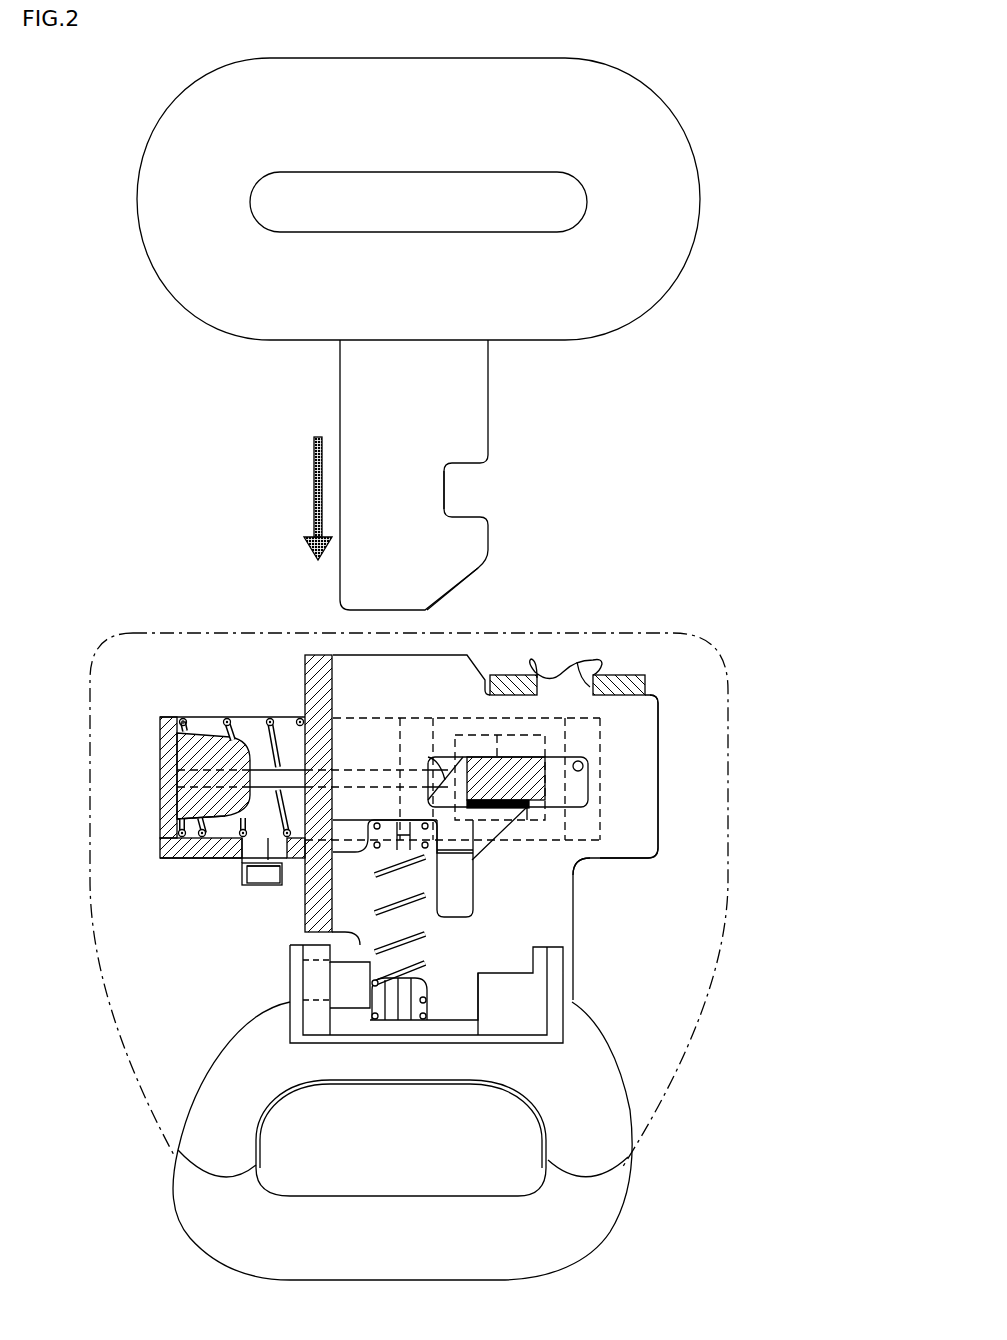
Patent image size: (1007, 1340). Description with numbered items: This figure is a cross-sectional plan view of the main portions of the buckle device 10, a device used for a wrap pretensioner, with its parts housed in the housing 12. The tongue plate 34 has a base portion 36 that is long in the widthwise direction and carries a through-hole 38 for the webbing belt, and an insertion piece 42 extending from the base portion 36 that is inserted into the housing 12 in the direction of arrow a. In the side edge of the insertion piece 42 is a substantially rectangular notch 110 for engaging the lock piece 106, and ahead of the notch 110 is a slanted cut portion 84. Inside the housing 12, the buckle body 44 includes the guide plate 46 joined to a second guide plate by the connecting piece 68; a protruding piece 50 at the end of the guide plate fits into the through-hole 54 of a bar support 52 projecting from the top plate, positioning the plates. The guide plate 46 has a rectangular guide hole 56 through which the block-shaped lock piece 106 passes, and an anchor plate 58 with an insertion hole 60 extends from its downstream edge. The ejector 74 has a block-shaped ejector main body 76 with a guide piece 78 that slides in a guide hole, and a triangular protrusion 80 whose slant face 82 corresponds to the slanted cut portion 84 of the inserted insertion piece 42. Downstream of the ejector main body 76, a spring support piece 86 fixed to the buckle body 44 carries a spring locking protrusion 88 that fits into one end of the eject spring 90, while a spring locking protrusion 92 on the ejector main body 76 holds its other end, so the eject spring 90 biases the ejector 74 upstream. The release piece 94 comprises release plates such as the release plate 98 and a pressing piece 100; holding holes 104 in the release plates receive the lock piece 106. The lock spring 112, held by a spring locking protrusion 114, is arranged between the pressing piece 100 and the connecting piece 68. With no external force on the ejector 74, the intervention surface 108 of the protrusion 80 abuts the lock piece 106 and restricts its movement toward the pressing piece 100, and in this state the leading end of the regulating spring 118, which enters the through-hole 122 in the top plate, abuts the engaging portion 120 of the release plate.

The buckle device 10 is at (840, 338).
The housing 12 is at (724, 941).
The tongue plate 34 is at (405, 334).
The base portion 36 is at (179, 281).
The through-hole 38 is at (335, 213).
The insertion piece 42 is at (355, 382).
The buckle body 44 is at (663, 748).
The guide plate 46 is at (633, 822).
The protruding piece 50 is at (552, 670).
The bar support 52 is at (627, 675).
The through-hole 54 is at (577, 663).
The guide hole 56 is at (590, 765).
The anchor plate 58 is at (615, 1199).
The insertion hole 60 is at (446, 1196).
The connecting piece 68 is at (306, 687).
The ejector 74 is at (573, 850).
The ejector main body 76 is at (306, 878).
The guide piece 78 is at (456, 905).
The protrusion 80 is at (447, 757).
The slant face 82 is at (428, 768).
The slanted cut portion 84 is at (466, 578).
The spring support piece 86 is at (588, 1016).
The spring locking protrusion 88 is at (415, 957).
The eject spring 90 is at (425, 1012).
The spring locking protrusion 92 is at (448, 855).
The release piece 94 is at (168, 714).
The release plate 98 is at (240, 728).
The pressing piece 100 is at (160, 773).
The holding hole 104 is at (480, 742).
The lock piece 106 is at (535, 790).
The intervention surface 108 is at (516, 826).
The notch 110 is at (447, 488).
The lock spring 112 is at (183, 720).
The spring locking protrusion 114 is at (222, 818).
The regulating spring 118 is at (265, 880).
The engaging portion 120 is at (167, 858).
The through-hole 122 is at (255, 872).